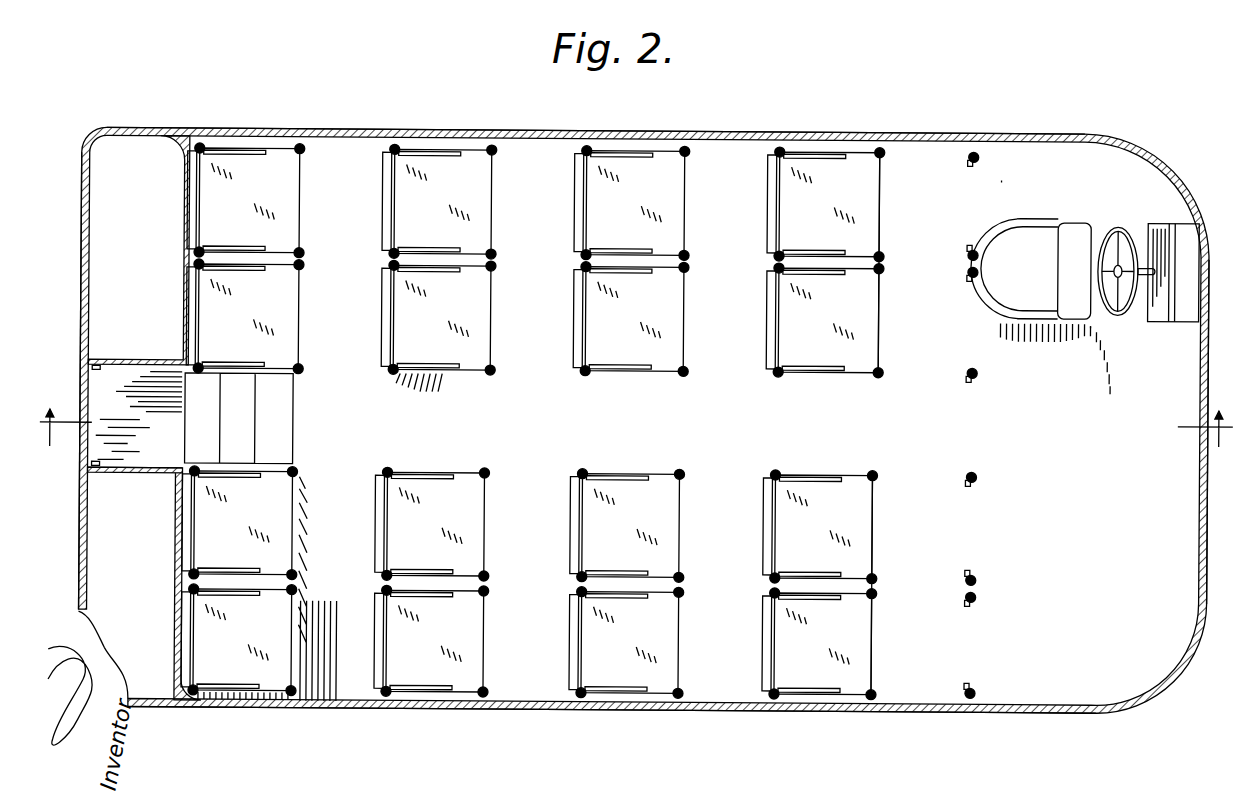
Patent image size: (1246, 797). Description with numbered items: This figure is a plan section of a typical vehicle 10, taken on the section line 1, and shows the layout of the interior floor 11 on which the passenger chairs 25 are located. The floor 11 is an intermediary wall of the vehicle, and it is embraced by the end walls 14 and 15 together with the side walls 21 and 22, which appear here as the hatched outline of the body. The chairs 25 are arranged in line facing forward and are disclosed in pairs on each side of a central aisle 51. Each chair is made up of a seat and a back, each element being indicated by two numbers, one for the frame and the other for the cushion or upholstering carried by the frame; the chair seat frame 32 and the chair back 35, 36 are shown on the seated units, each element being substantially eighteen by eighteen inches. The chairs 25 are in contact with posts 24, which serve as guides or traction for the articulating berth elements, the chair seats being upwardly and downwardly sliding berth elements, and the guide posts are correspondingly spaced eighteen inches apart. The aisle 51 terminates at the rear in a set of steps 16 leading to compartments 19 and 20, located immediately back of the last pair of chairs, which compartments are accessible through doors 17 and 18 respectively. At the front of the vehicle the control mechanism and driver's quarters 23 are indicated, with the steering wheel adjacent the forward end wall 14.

The section line 1 is at (636, 440).
The vehicle 10 is at (903, 126).
The floor 11 is at (1000, 173).
The end wall 14 is at (1198, 413).
The end wall 15 is at (80, 318).
The steps 16 is at (268, 412).
The door 17 is at (150, 368).
The door 18 is at (130, 468).
The compartment 19 is at (139, 250).
The compartment 20 is at (144, 583).
The side wall 21 is at (478, 128).
The side wall 22 is at (566, 710).
The control mechanism and driver's quarters 23 is at (1106, 214).
The posts 24 is at (300, 150).
The passenger chairs 25 is at (894, 227).
The chair seat frame 32 is at (903, 531).
The chair back frame 35 is at (390, 325).
The chair back cushion 36 is at (184, 311).
The central aisle 51 is at (393, 537).